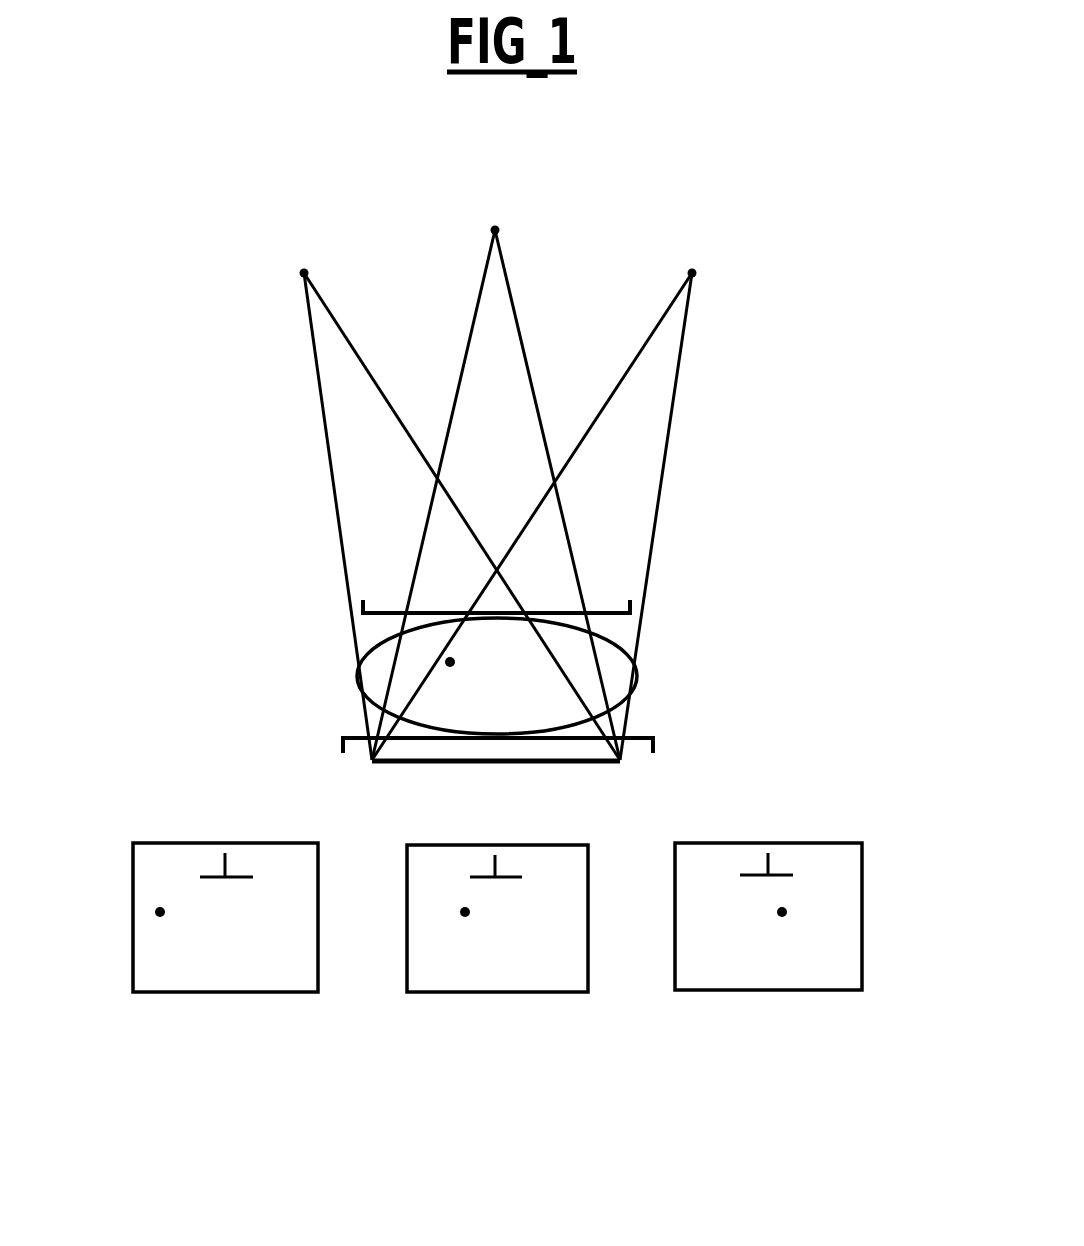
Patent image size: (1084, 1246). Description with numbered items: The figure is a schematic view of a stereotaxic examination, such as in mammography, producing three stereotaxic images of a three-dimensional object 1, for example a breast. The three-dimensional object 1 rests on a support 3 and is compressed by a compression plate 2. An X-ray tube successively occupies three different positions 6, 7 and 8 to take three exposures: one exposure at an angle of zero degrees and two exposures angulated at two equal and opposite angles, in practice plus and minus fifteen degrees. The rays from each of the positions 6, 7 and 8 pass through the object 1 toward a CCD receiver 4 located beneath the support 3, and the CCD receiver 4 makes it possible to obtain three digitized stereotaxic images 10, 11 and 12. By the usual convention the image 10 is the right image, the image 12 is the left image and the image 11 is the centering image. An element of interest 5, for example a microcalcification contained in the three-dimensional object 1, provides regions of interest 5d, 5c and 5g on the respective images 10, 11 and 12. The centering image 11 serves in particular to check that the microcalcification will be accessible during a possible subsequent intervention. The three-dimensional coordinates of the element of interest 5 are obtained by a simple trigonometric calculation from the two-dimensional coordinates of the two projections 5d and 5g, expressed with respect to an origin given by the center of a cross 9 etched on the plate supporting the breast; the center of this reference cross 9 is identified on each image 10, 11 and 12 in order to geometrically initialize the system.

The three-dimensional object 1 is at (642, 644).
The compression plate 2 is at (617, 604).
The support 3 is at (654, 742).
The CCD receiver 4 is at (550, 776).
The element of interest 5 is at (428, 655).
The region of interest on centering image 5c is at (467, 914).
The region of interest on right image 5d is at (162, 914).
The region of interest on left image 5g is at (784, 914).
The X-ray tube position 6 is at (306, 272).
The X-ray tube position 7 is at (497, 229).
The X-ray tube position 8 is at (694, 272).
The reference cross 9 is at (206, 858).
The right image 10 is at (185, 943).
The centering image 11 is at (543, 968).
The left image 12 is at (820, 956).